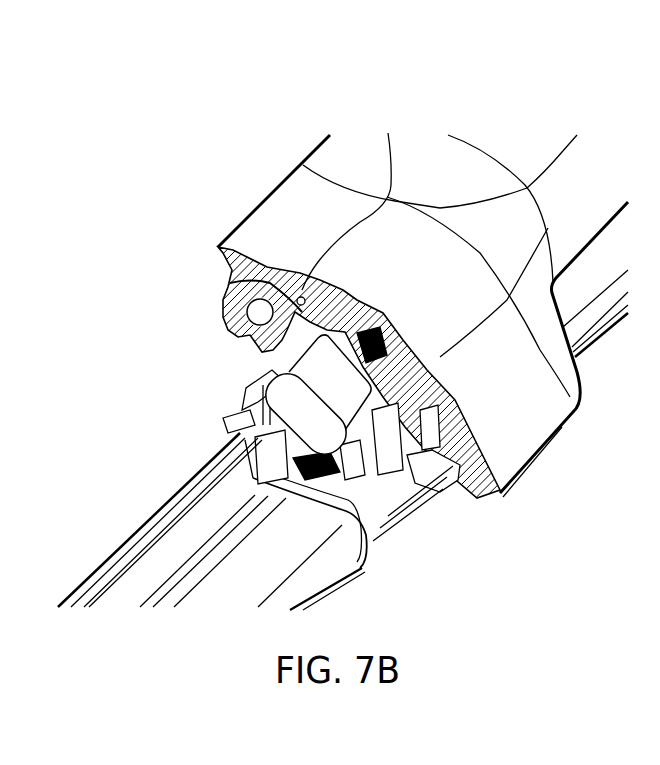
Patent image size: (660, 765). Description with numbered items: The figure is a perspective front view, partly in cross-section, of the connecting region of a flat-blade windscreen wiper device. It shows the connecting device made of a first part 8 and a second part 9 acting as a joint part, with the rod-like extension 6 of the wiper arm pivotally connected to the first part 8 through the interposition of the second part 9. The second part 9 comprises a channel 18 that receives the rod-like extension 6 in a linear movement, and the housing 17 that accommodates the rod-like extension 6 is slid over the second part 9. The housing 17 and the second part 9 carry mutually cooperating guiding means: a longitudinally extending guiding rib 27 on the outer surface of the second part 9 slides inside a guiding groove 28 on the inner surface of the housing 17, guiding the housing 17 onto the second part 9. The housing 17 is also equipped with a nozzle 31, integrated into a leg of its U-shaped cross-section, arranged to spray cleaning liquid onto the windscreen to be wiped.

The housing 17 is at (357, 163).
The guiding groove 28 is at (302, 298).
The guiding rib 27 is at (298, 303).
The second part 9 is at (327, 330).
The nozzle 31 is at (258, 311).
The channel 18 is at (385, 377).
The rod-like extension 6 is at (288, 414).
The first part 8 is at (385, 515).